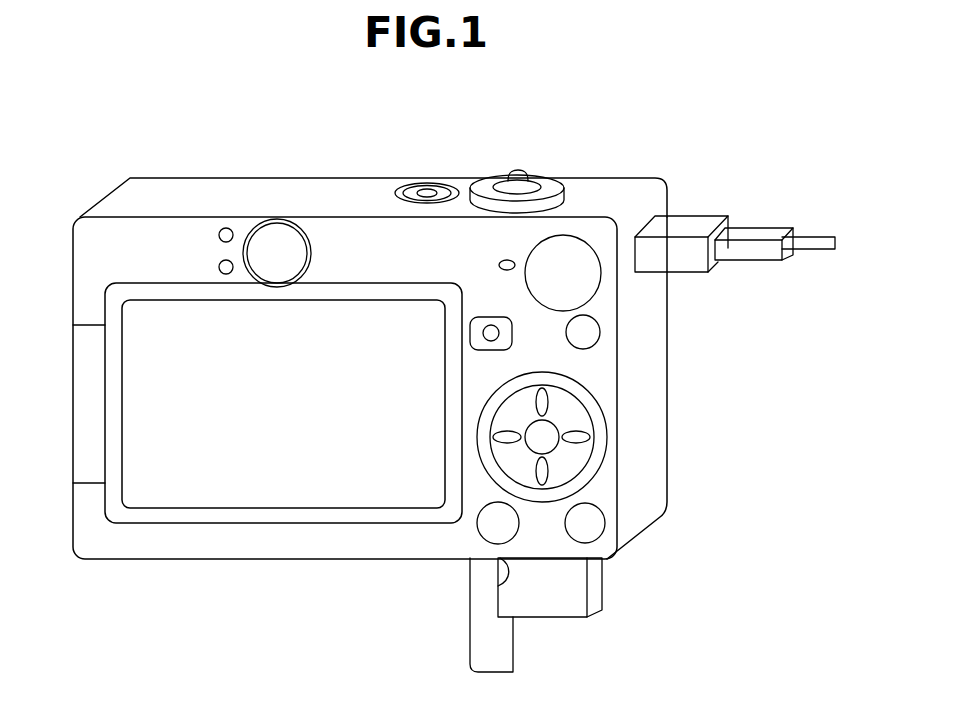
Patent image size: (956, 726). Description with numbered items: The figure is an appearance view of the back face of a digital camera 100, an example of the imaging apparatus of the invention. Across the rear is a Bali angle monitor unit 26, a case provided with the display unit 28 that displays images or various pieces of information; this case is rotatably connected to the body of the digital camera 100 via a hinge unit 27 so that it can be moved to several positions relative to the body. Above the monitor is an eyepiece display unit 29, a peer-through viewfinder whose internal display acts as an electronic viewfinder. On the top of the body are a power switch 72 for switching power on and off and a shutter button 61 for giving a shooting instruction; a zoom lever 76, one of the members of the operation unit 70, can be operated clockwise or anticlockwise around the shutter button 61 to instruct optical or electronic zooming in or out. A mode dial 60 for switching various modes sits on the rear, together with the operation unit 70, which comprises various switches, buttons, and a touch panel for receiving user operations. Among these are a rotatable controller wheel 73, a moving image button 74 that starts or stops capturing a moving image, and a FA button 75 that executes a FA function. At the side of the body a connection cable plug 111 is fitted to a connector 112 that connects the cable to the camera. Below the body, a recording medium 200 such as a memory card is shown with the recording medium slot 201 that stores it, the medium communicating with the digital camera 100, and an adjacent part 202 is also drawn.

The digital camera 100 is at (203, 586).
The Bali angle monitor unit 26 is at (137, 292).
The hinge unit 27 is at (80, 385).
The display unit 28 is at (182, 312).
The eyepiece display unit 29 is at (289, 237).
The power switch 72 is at (428, 185).
The shutter button 61 is at (526, 182).
The zoom lever 76 is at (514, 173).
The mode dial 60 is at (586, 252).
The connector 112 is at (693, 220).
The connection cable plug 111 is at (760, 236).
The moving image button 74 is at (490, 317).
The FA button 75 is at (568, 326).
The controller wheel 73 is at (499, 389).
The operation unit 70 is at (543, 210).
The recording medium 200 is at (577, 593).
The recording medium slot 201 is at (497, 586).
The strap 202 is at (514, 650).